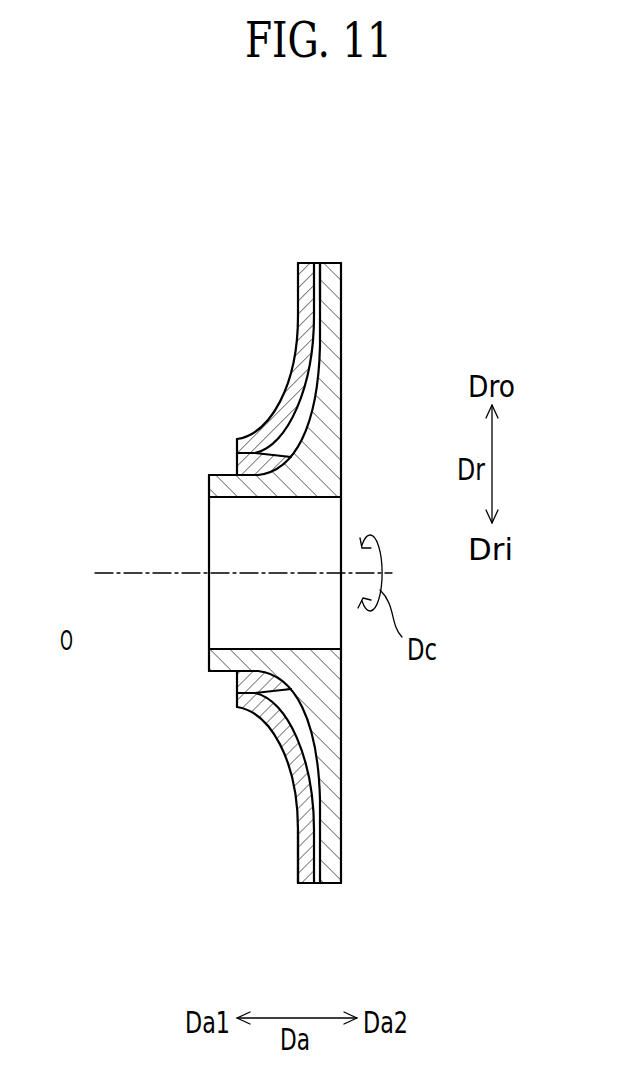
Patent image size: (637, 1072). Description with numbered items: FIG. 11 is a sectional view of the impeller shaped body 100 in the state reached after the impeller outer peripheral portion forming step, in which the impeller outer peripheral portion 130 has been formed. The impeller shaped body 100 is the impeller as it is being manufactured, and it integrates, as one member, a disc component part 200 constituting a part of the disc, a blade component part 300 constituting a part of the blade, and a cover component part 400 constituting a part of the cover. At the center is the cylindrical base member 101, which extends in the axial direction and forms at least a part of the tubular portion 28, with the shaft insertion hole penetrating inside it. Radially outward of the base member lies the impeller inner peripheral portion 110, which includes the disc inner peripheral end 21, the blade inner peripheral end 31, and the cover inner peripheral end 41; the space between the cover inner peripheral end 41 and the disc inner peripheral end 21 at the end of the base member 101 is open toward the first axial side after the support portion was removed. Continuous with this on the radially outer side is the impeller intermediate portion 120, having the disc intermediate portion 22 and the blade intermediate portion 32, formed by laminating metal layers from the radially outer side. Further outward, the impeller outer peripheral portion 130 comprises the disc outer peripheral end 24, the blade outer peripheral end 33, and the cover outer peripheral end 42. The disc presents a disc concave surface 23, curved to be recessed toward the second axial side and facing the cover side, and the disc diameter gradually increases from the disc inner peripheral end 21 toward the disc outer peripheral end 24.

The disc inner peripheral end 21 is at (209, 488).
The disc intermediate portion 22 is at (343, 353).
The disc concave surface 23 is at (303, 418).
The disc outer peripheral end 24 is at (333, 262).
The tubular portion 28 is at (198, 566).
The blade inner peripheral end 31 is at (289, 446).
The blade intermediate portion 32 is at (303, 392).
The blade outer peripheral end 33 is at (317, 262).
The cover inner peripheral end 41 is at (237, 438).
The cover outer peripheral end 42 is at (308, 262).
The impeller shaped body 100 is at (161, 772).
The base member 101 is at (253, 483).
The impeller inner peripheral portion 110 is at (209, 659).
The impeller intermediate portion 120 is at (169, 532).
The impeller outer peripheral portion 130 is at (298, 857).
The disc component part 200 is at (340, 832).
The blade component part 300 is at (315, 883).
The cover component part 400 is at (303, 881).